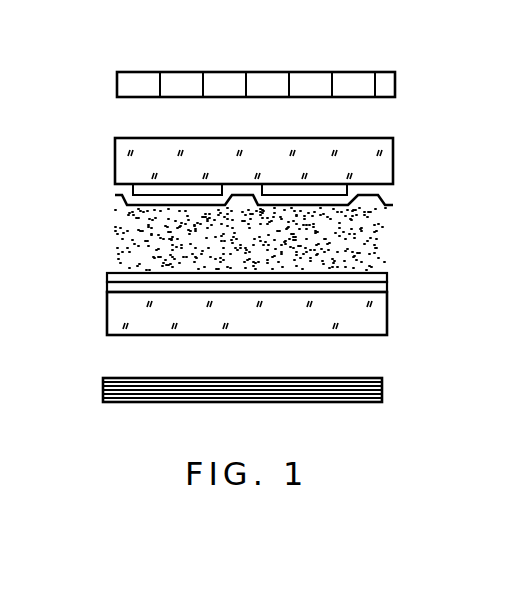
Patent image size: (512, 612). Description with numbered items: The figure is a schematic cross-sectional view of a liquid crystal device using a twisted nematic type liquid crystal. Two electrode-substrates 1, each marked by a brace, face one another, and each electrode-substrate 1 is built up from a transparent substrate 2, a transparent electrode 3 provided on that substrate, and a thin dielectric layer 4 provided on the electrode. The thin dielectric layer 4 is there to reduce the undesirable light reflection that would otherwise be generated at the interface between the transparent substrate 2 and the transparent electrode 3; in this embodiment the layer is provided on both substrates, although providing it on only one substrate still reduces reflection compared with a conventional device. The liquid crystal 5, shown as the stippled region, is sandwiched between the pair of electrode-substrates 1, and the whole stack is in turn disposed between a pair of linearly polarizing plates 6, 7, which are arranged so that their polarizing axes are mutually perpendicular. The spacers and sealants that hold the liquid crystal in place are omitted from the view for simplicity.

The electrode-substrate 1 is at (254, 254).
The transparent substrate 2 is at (393, 158).
The transparent electrode 3 is at (347, 190).
The thin dielectric layer 4 is at (358, 205).
The liquid crystal 5 is at (372, 253).
The linearly polarizing plate 6 is at (395, 85).
The linearly polarizing plate 7 is at (382, 392).